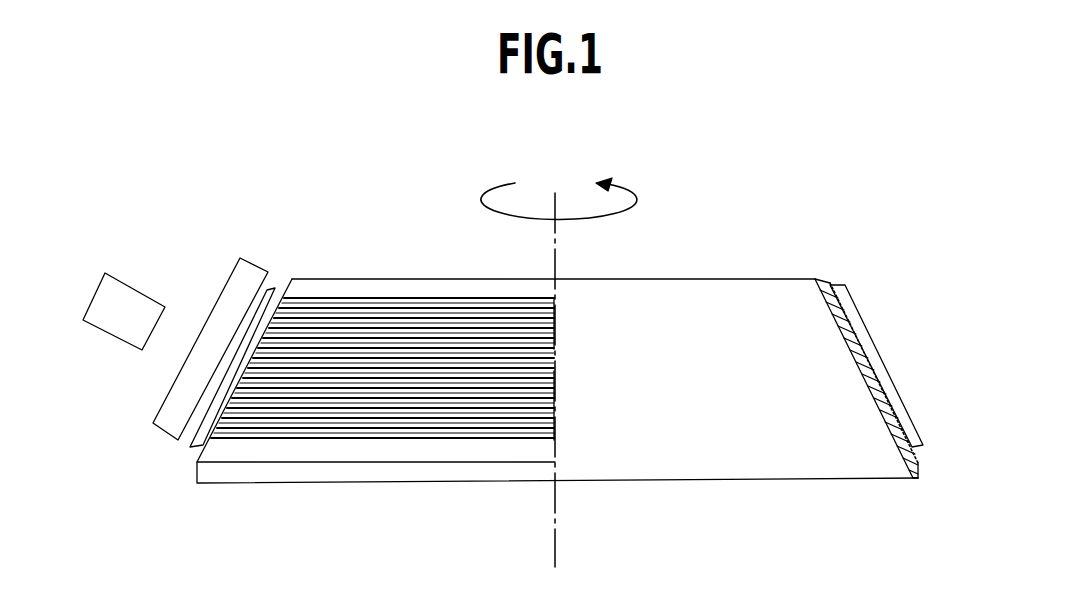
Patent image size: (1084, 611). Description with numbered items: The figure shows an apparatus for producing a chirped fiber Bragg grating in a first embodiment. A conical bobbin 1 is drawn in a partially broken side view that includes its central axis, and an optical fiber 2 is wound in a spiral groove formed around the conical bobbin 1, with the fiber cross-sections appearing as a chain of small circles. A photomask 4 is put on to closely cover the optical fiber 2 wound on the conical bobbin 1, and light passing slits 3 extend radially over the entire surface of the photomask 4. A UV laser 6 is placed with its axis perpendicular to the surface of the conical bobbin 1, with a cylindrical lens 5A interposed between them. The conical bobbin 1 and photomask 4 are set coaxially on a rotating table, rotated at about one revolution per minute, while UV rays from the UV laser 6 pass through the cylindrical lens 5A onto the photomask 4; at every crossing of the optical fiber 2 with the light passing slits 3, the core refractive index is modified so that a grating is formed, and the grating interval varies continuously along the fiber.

The conical bobbin 1 is at (258, 484).
The optical fiber 2 is at (410, 296).
The light passing slits 3 is at (864, 318).
The photomask 4 is at (281, 292).
The cylindrical lens 5A is at (227, 283).
The UV laser 6 is at (122, 282).